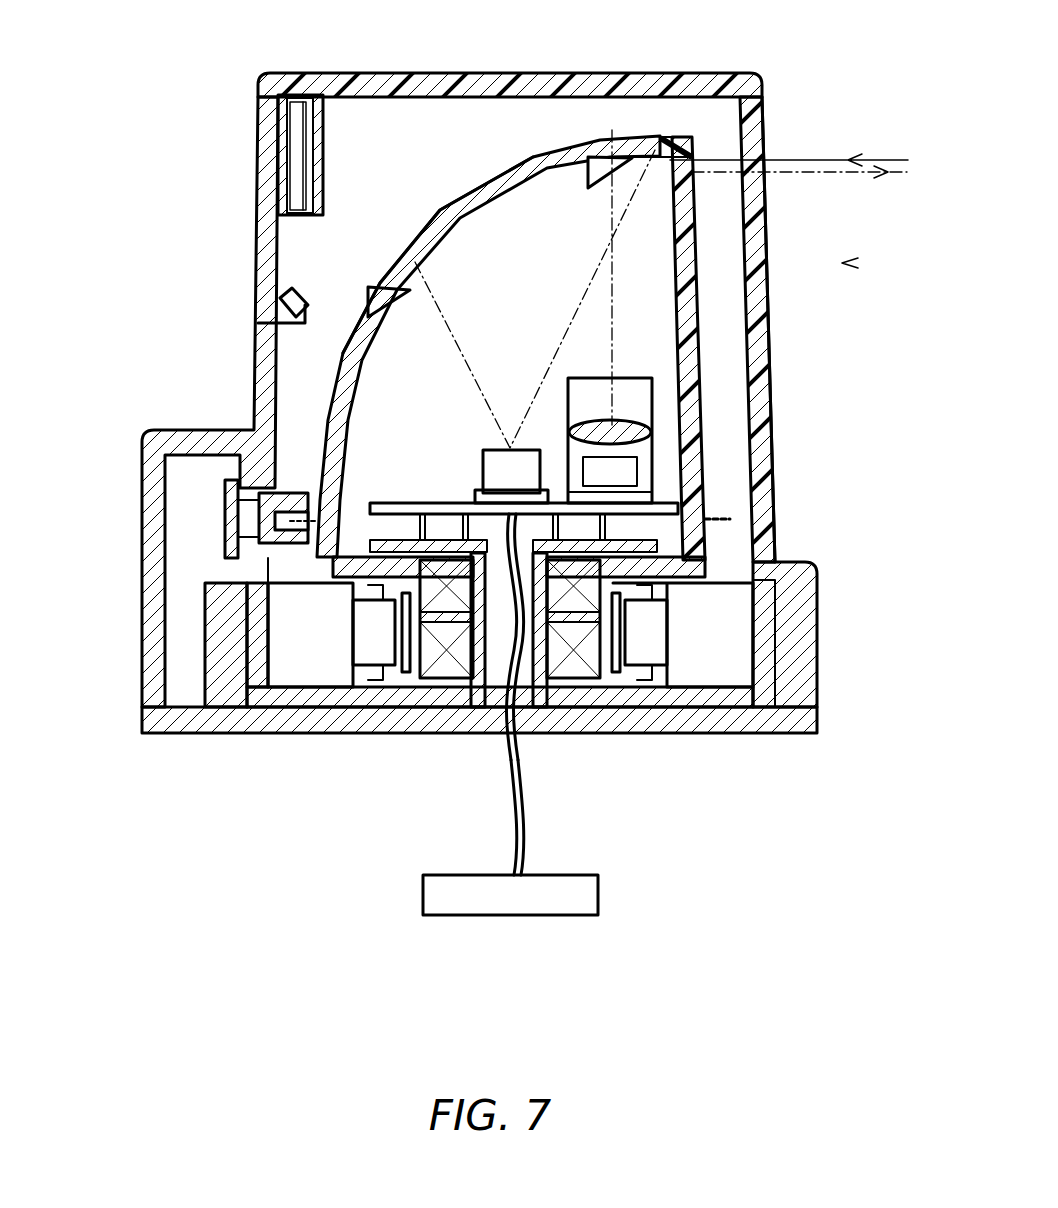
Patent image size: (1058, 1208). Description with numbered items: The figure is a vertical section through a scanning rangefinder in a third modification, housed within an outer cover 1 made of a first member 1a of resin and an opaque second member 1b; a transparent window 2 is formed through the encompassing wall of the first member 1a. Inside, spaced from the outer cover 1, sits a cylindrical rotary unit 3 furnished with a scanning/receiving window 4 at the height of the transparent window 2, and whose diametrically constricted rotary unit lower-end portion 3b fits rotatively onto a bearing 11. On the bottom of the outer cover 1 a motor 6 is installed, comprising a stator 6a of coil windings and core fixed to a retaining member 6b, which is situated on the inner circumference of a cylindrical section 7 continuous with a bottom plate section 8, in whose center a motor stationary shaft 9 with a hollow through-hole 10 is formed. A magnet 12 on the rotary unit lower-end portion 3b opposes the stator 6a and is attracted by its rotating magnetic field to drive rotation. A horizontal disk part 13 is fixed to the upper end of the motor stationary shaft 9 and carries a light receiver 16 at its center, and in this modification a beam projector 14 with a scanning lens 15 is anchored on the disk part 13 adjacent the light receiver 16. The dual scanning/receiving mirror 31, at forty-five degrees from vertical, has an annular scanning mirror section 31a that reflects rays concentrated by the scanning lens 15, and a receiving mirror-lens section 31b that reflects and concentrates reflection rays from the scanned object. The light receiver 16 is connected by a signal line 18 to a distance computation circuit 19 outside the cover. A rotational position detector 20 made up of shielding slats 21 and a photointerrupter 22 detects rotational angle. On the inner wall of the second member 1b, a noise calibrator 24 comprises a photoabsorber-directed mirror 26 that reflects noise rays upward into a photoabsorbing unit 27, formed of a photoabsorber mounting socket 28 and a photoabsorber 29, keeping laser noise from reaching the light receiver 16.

The outer cover 1 is at (770, 375).
The first member 1a is at (768, 342).
The second member 1b is at (255, 355).
The transparent window 2 is at (768, 290).
The cylindrical rotary unit 3 is at (690, 468).
The rotary unit lower-end portion 3b is at (553, 690).
The scanning/receiving window 4 is at (697, 200).
The motor 6 is at (786, 629).
The stator 6a is at (657, 655).
The retaining member 6b is at (715, 665).
The cylindrical section 7 is at (765, 648).
The bottom plate section 8 is at (360, 703).
The motor stationary shaft 9 is at (523, 697).
The hollow through-hole 10 is at (487, 655).
The bearing 11 is at (443, 673).
The magnet 12 is at (392, 672).
The horizontal disk part 13 is at (390, 503).
The beam projector 14 is at (637, 467).
The scanning lens 15 is at (640, 432).
The light receiver 16 is at (483, 468).
The signal line 18 is at (524, 830).
The distance computation circuit 19 is at (600, 895).
The rotational position detector 20 is at (212, 526).
The shielding slats 21 is at (715, 519).
The photointerrupter 22 is at (290, 505).
The noise calibrator 24 is at (318, 293).
The photoabsorber-directed mirror 26 is at (288, 300).
The photoabsorbing unit 27 is at (311, 227).
The photoabsorber mounting socket 28 is at (297, 150).
The photoabsorber 29 is at (290, 128).
The dual scanning/receiving mirror 31 is at (510, 160).
The annular scanning mirror section 31a is at (615, 160).
The receiving mirror-lens section 31b is at (447, 212).